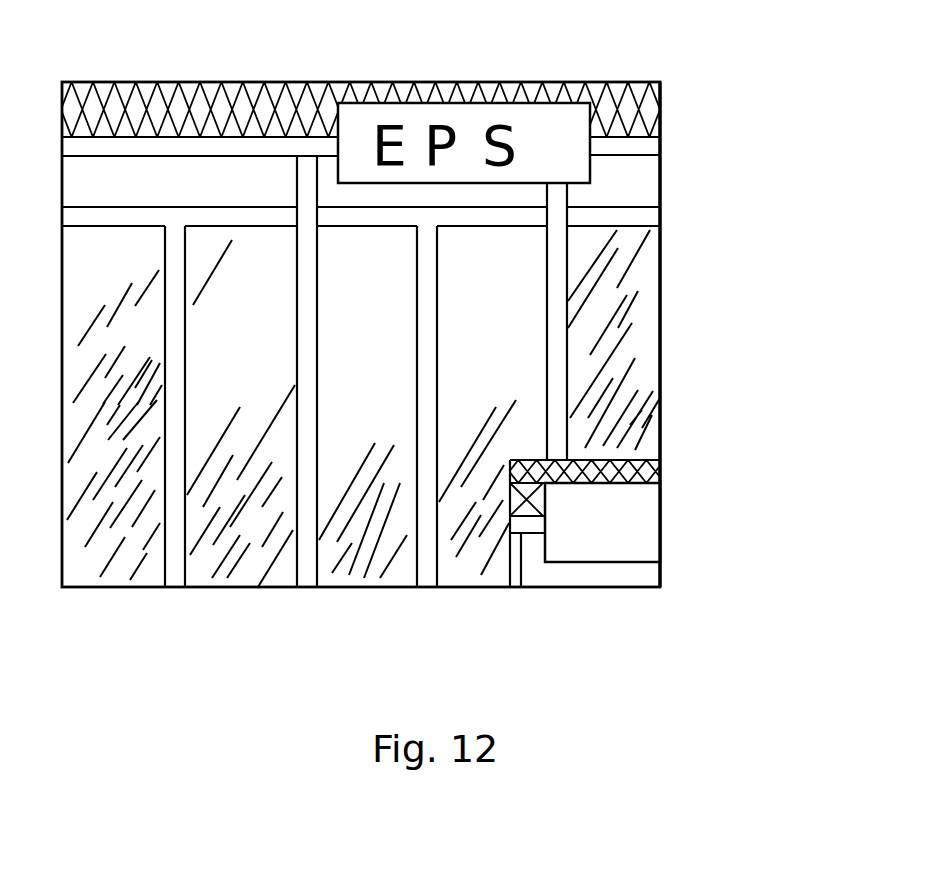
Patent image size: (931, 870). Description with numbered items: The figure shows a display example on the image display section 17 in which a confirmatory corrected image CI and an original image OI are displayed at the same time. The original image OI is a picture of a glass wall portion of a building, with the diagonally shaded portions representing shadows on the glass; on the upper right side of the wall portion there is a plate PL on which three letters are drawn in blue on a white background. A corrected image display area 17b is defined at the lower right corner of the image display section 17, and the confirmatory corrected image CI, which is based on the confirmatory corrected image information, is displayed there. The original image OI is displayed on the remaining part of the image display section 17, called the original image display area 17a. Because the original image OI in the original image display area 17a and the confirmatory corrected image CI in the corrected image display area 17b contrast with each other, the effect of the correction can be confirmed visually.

The original image OI is at (221, 193).
The plate PL is at (482, 102).
The confirmatory corrected image CI is at (620, 543).
The image display section 17 is at (751, 334).
The original image display area 17a is at (662, 388).
The corrected image display area 17b is at (720, 523).